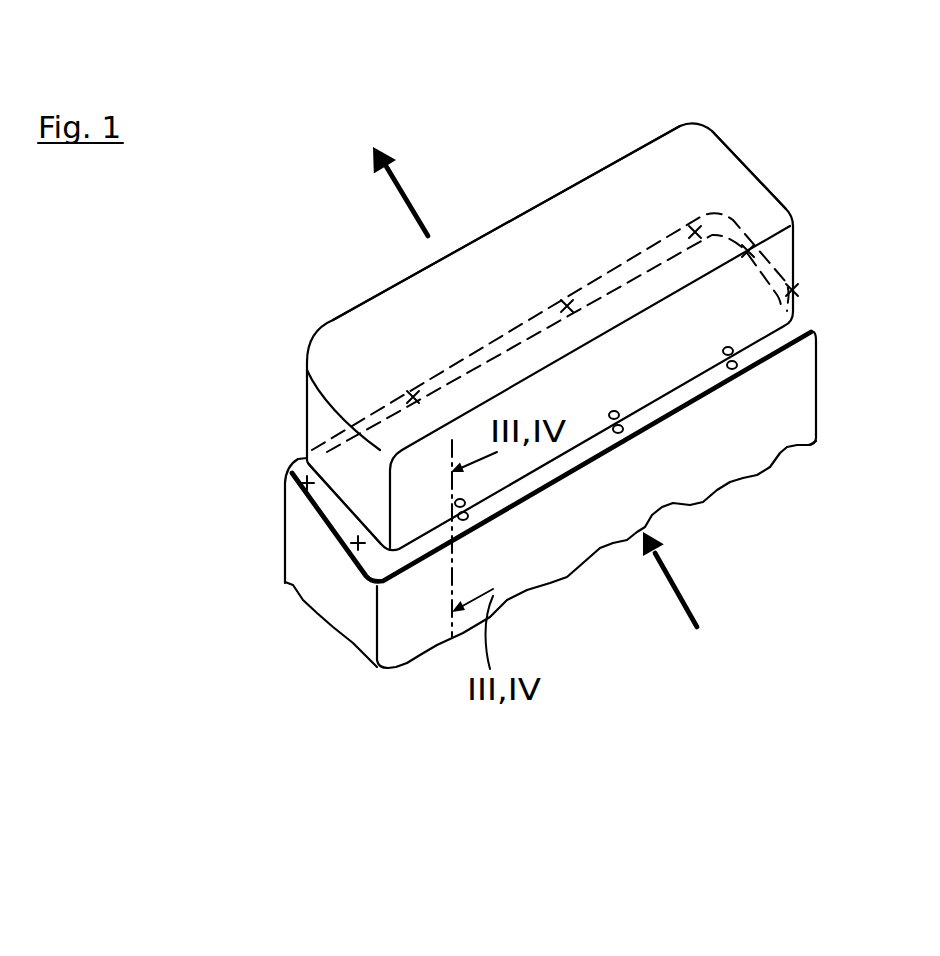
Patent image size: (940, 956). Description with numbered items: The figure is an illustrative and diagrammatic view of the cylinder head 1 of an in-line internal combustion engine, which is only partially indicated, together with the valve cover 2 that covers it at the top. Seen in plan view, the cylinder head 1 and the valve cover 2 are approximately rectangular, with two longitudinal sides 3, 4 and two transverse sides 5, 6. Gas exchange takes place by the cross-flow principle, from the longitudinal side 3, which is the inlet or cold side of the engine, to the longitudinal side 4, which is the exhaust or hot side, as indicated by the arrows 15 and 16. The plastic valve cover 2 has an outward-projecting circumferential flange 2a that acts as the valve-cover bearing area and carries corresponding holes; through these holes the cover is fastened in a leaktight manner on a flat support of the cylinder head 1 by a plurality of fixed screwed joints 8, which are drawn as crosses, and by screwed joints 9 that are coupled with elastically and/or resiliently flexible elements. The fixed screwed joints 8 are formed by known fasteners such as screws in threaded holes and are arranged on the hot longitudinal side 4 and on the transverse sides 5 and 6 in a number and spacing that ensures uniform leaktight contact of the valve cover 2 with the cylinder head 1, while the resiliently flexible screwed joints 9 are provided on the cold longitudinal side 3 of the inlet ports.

The cylinder head 1 is at (272, 582).
The valve cover 2 is at (703, 118).
The circumferential flange 2a is at (367, 556).
The longitudinal side 3 is at (549, 522).
The longitudinal side 4 is at (525, 201).
The transverse side 5 is at (367, 500).
The transverse side 6 is at (766, 172).
The fixed screwed joints 8 is at (411, 395).
The resiliently flexible screwed joints 9 is at (473, 507).
The arrow 15 is at (690, 602).
The arrow 16 is at (410, 200).